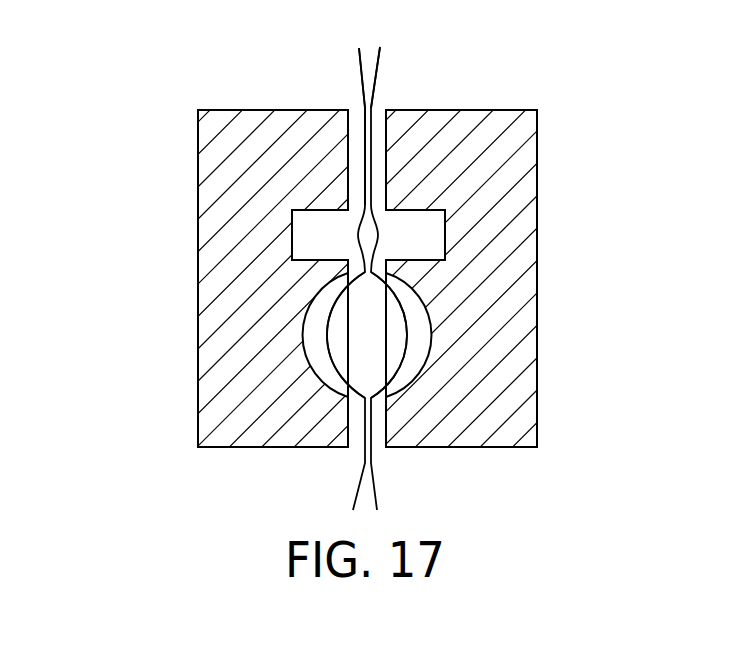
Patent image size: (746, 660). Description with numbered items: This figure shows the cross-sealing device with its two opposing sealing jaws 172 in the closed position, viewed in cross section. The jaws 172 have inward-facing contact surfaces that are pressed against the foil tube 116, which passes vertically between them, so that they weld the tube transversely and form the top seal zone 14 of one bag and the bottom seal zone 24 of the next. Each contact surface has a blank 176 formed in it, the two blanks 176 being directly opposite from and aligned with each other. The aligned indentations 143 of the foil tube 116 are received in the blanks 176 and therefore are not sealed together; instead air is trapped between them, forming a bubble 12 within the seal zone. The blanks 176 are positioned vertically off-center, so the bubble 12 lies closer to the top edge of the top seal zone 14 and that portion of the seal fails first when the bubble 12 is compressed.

The bubble 12 is at (371, 338).
The top seal zone 14 is at (366, 268).
The bottom seal zone 24 is at (358, 108).
The foil tube 116 is at (381, 62).
The indentations 143 is at (323, 316).
The sealing jaws 172 is at (198, 169).
The blanks 176 is at (412, 310).